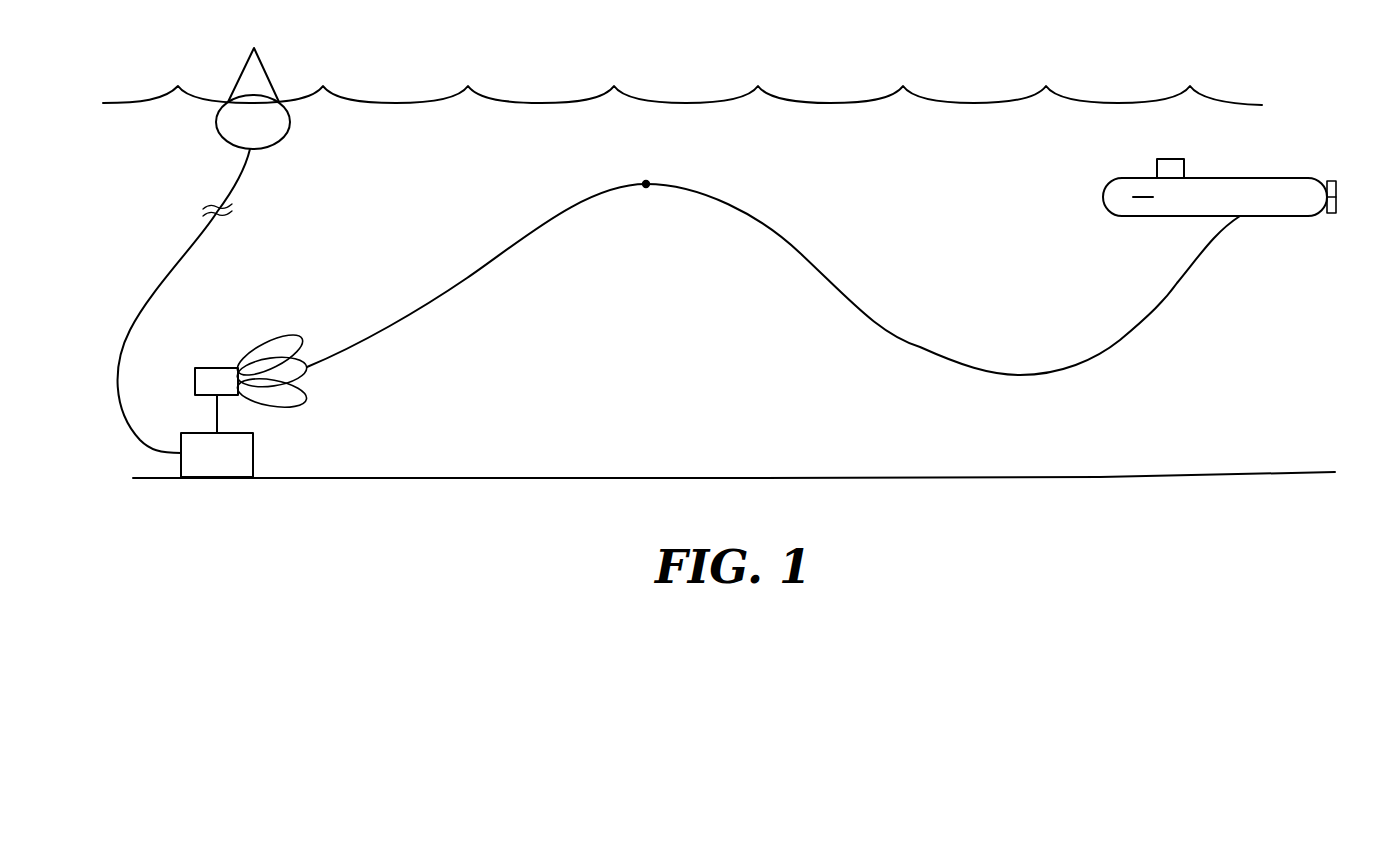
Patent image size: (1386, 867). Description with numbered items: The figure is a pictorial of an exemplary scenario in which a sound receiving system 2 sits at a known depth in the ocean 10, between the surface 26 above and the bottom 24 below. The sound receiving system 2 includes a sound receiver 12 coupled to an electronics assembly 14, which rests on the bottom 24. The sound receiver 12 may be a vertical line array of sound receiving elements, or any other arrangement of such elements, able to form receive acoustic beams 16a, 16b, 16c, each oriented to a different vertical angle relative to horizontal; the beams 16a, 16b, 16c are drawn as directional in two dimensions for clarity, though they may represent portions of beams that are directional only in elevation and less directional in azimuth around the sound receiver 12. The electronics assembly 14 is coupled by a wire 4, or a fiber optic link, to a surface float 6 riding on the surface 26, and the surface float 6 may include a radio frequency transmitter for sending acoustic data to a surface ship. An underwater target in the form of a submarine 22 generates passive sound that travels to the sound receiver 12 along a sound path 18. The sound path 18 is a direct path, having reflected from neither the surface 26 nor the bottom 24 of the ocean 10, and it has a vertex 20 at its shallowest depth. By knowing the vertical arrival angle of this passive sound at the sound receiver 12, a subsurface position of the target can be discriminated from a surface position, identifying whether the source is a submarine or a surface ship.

The sound receiving system 2 is at (264, 406).
The wire 4 is at (188, 250).
The surface float 6 is at (280, 127).
The ocean 10 is at (795, 174).
The sound receiver 12 is at (215, 368).
The electronics assembly 14 is at (238, 477).
The receive acoustic beam 16a is at (273, 342).
The receive acoustic beam 16b is at (305, 375).
The receive acoustic beam 16c is at (300, 408).
The sound path 18 is at (465, 278).
The vertex 20 is at (646, 186).
The submarine 22 is at (1267, 178).
The bottom 24 is at (733, 475).
The surface 26 is at (947, 105).